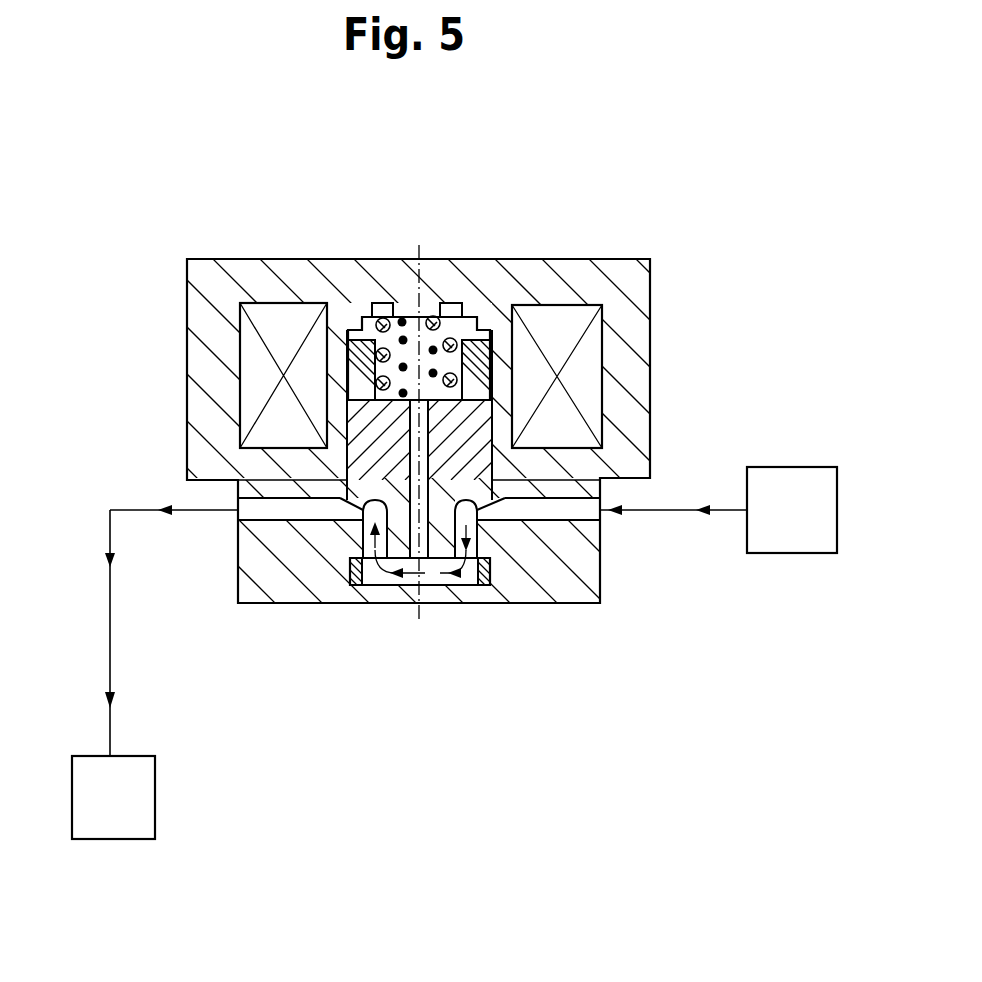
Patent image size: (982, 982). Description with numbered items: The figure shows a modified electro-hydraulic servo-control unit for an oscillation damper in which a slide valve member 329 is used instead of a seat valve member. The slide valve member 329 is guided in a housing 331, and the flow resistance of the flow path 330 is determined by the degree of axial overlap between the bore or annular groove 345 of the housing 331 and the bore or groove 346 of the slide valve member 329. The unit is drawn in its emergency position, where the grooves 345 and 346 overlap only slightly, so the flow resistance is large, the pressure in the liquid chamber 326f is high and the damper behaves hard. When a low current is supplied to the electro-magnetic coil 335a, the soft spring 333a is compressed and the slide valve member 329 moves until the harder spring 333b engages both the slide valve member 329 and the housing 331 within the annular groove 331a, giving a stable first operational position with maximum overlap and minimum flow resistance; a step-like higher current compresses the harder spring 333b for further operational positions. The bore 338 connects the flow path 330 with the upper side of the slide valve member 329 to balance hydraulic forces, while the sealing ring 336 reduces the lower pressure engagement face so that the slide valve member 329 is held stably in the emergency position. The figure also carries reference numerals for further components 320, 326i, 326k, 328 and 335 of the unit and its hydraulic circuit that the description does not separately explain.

The brake cylinder / consumer 320 is at (128, 840).
The liquid chamber 326f is at (790, 553).
The valve seat 326i is at (342, 518).
The outlet channel 326k is at (300, 512).
The housing 328 is at (660, 402).
The slide valve member 329 is at (458, 417).
The flow path 330 is at (112, 661).
The housing 331 is at (283, 263).
The annular groove 331a is at (458, 262).
The soft spring 333a is at (397, 267).
The harder spring 333b is at (375, 373).
The electromagnet 335 is at (598, 305).
The electro-magnetic coil 335a is at (588, 353).
The sealing ring 336 is at (484, 582).
The bore 338 is at (430, 575).
The bore or annular groove of the housing 345 is at (242, 480).
The bore or groove of the slide valve member 346 is at (365, 522).